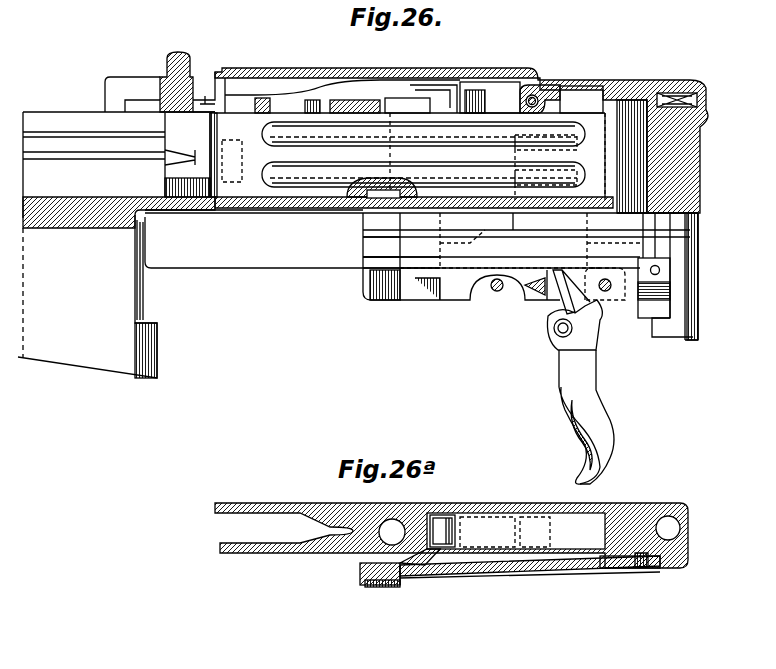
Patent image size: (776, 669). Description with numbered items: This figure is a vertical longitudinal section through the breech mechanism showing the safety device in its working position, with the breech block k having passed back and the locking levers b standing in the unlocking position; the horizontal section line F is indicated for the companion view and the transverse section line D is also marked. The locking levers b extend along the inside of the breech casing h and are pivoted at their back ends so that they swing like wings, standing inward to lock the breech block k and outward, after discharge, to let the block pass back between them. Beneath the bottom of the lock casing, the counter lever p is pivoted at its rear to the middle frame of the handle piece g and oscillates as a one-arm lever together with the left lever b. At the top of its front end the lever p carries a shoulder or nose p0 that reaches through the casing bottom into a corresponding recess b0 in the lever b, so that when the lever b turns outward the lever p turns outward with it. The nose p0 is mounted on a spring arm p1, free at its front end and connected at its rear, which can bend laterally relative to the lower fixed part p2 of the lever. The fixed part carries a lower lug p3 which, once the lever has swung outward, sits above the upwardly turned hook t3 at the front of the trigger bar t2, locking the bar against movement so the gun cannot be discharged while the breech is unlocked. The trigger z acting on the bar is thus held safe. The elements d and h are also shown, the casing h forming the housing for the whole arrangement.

In FIG. 26, the section line D— D is at (390, 113).
In FIG. 26, the locking lug d is at (565, 82).
In FIG. 26, the breech casing h is at (690, 150).
In FIG. 26, the breech block k is at (172, 168).
In FIG. 26, the locking lever b is at (413, 156).
In FIG. 26, the recess in the lever b b0 is at (412, 183).
In FIG. 26, the shoulder or nose p0 is at (380, 185).
In FIG. 26, the section line F— F is at (300, 228).
In FIG. 26, the counter lever p is at (665, 230).
In FIG. 26, the spring arm p1 is at (375, 220).
In FIG. 26A, the spring arm p1 is at (360, 574).
In FIG. 26, the lower fixed part of lever p p2 is at (375, 248).
In FIG. 26A, the lower fixed part of lever p p2 is at (602, 572).
In FIG. 26, the lower shoulder or lug p3 is at (370, 266).
In FIG. 26A, the lower shoulder or lug p3 is at (385, 588).
In FIG. 26, the handle piece g is at (266, 262).
In FIG. 26A, the handle piece g is at (640, 512).
In FIG. 26, the hook-like end of the trigger bar t3 is at (373, 280).
In FIG. 26A, the hook-like end of the trigger bar t3 is at (402, 584).
In FIG. 26, the trigger bar t2 is at (457, 298).
In FIG. 26A, the trigger bar t2 is at (470, 517).
In FIG. 26, the trigger z is at (612, 420).